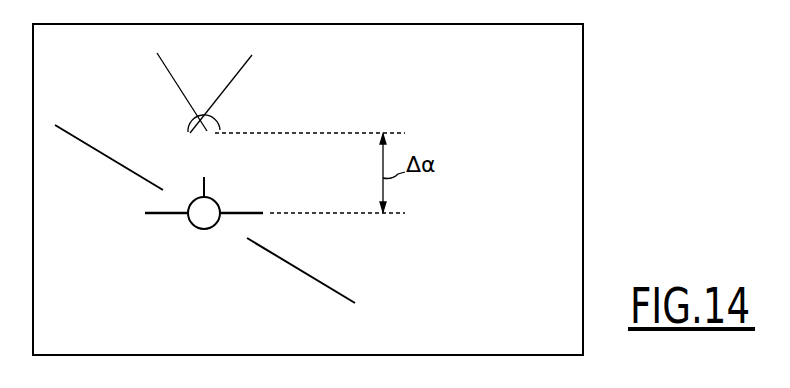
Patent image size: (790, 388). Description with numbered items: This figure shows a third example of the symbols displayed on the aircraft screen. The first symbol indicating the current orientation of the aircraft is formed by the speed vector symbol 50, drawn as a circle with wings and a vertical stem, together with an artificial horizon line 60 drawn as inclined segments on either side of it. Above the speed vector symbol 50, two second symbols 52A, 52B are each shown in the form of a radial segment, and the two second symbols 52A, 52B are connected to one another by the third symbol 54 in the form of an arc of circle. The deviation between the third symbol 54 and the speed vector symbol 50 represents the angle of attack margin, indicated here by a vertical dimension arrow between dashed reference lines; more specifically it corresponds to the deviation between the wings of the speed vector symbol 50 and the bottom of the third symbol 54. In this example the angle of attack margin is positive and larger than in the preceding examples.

The speed vector symbol 50 is at (218, 231).
The second symbol 52A is at (243, 73).
The second symbol 52B is at (173, 81).
The third symbol 54 is at (220, 126).
The artificial horizon line 60 is at (265, 251).